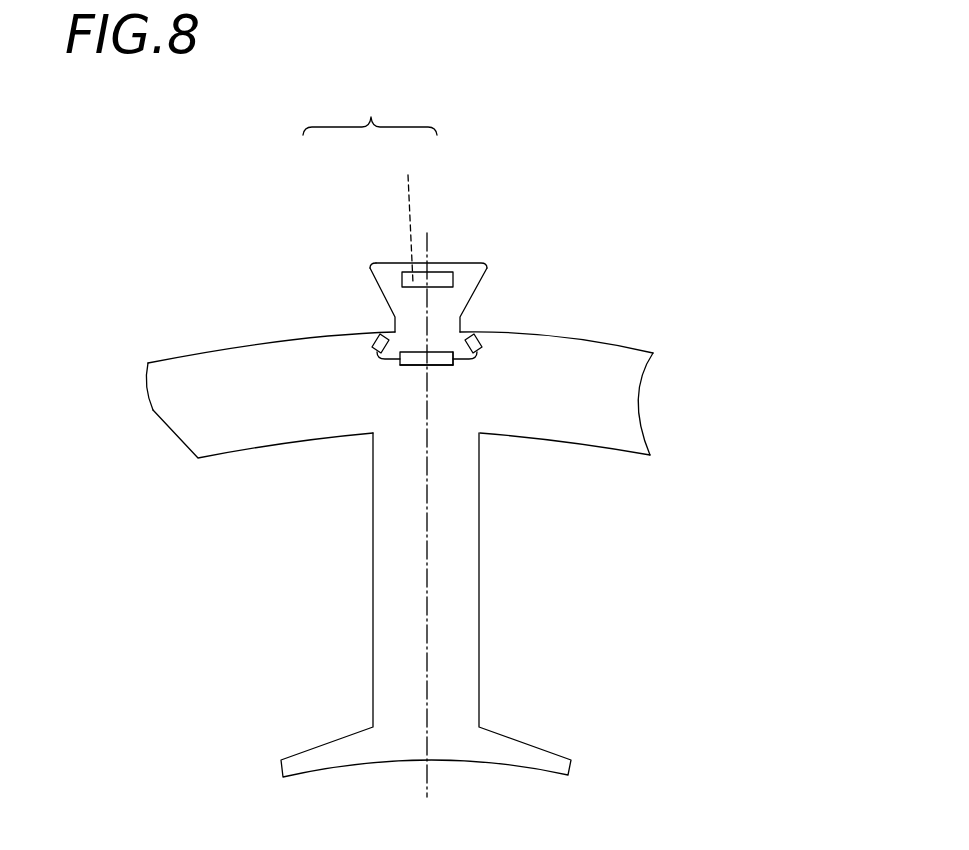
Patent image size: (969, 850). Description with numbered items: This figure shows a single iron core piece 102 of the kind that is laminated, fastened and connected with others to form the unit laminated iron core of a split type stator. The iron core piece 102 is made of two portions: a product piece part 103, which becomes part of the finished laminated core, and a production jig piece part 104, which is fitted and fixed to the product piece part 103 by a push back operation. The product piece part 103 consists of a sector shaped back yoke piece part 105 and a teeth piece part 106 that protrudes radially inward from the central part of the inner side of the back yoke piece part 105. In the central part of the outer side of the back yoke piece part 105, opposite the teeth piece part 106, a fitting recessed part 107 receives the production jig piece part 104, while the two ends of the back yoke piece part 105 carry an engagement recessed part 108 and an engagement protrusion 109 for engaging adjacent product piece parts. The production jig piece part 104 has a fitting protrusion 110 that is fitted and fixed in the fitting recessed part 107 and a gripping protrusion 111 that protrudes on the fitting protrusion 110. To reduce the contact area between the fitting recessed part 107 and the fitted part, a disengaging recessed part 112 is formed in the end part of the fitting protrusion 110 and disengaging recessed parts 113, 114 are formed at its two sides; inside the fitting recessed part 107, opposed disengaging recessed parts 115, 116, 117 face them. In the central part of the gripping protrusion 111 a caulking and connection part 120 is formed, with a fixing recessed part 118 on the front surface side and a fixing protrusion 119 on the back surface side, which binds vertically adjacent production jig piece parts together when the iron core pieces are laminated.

The iron core piece 102 is at (216, 346).
The product piece part 103 is at (614, 348).
The production jig piece part 104 is at (456, 252).
The back yoke piece part 105 is at (603, 363).
The teeth piece part 106 is at (455, 657).
The fitting recessed part 107 is at (457, 360).
The engagement recessed part 108 is at (625, 397).
The engagement protrusion 109 is at (153, 408).
The fitting protrusion 110 is at (455, 358).
The gripping protrusion 111 is at (470, 272).
The disengaging recessed part 112 is at (386, 334).
The disengaging recessed part 113 is at (388, 367).
The disengaging recessed part 114 is at (458, 357).
The disengaging recessed part 115 is at (414, 366).
The disengaging recessed part 116 is at (372, 343).
The disengaging recessed part 117 is at (482, 340).
The fixing recessed part 118 is at (401, 280).
The fixing protrusion 119 is at (410, 212).
The caulking and connection part 120 is at (370, 110).